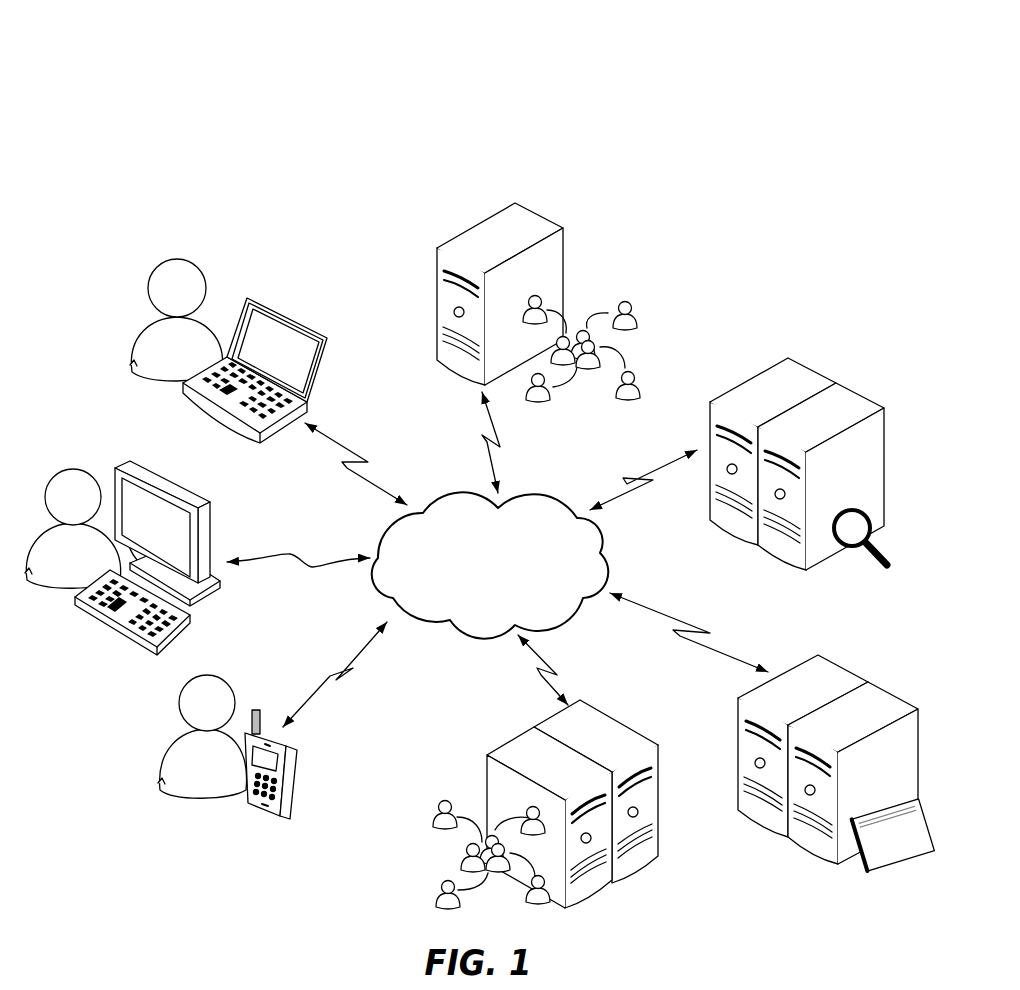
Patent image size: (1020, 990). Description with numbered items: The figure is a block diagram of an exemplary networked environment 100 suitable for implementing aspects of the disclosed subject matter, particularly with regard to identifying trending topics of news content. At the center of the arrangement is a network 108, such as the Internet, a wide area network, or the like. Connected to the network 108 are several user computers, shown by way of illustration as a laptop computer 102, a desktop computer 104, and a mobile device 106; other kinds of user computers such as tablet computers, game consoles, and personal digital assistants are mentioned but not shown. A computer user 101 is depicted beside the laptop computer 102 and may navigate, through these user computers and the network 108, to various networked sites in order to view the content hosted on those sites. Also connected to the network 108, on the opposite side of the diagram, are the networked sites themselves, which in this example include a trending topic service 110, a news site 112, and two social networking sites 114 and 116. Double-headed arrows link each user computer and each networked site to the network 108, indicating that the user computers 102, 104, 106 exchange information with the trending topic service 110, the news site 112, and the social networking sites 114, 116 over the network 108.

The networked environment 100 is at (258, 128).
The computer user 101 is at (137, 280).
The laptop computer 102 is at (283, 310).
The desktop computer 104 is at (117, 450).
The mobile device 106 is at (258, 812).
The network 108 is at (474, 590).
The trending topic service 110 is at (815, 373).
The news site 112 is at (852, 670).
The social networking site 114 is at (563, 257).
The social networking site 116 is at (535, 730).